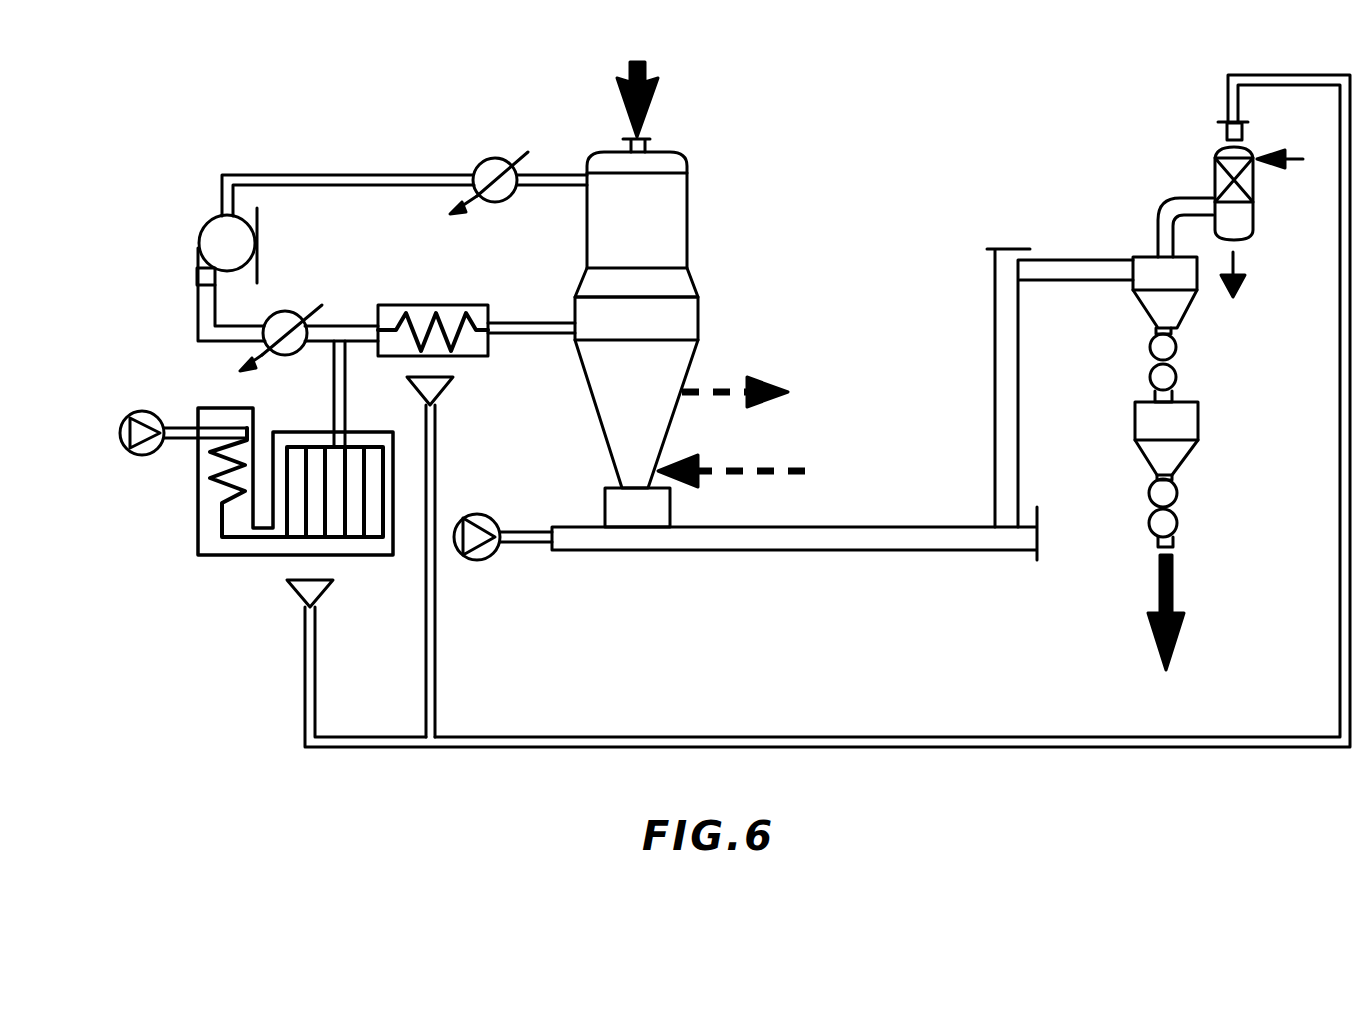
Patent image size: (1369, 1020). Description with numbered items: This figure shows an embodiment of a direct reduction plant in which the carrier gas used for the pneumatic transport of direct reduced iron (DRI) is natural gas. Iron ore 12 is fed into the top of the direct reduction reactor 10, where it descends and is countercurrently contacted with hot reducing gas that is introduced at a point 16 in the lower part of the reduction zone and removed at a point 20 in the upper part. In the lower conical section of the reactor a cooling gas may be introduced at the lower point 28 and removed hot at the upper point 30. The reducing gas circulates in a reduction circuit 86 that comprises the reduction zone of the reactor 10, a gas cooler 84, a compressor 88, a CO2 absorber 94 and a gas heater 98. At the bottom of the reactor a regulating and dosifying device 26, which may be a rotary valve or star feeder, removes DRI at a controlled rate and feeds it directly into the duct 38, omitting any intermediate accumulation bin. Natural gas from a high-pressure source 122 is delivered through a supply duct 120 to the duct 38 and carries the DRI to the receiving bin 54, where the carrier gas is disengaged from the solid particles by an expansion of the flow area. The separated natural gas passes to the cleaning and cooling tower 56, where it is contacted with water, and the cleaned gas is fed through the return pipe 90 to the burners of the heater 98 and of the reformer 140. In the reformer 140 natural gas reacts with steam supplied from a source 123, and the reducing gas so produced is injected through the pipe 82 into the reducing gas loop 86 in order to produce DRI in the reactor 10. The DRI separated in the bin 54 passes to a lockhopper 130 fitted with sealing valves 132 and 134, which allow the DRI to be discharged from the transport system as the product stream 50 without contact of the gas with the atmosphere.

The direct reduction reactor 10 is at (688, 240).
The iron ore 12 is at (623, 102).
The reducing gas introduction point 16 is at (547, 322).
The reducing gas removal point 20 is at (565, 173).
The regulating and dosifying device 26 is at (605, 493).
The cooling gas inlet 28 is at (740, 467).
The cooling gas outlet 30 is at (727, 383).
The duct 38 is at (935, 523).
The product discharge 50 is at (1160, 603).
The receiving bin 54 is at (1145, 253).
The cleaning and cooling tower 56 is at (1253, 207).
The pipe 82 is at (344, 415).
The gas cooler 84 is at (490, 161).
The reduction circuit 86 is at (345, 168).
The compressor 88 is at (197, 237).
The return pipe 90 is at (822, 737).
The CO2 absorber 94 is at (277, 312).
The gas heater 98 is at (440, 303).
The supply duct 120 is at (532, 530).
The natural gas source 122 is at (492, 557).
The steam source 123 is at (143, 457).
The lockhopper 130 is at (1160, 447).
The sealing valve 132 is at (1127, 362).
The sealing valve 134 is at (1160, 513).
The reformer 140 is at (253, 557).